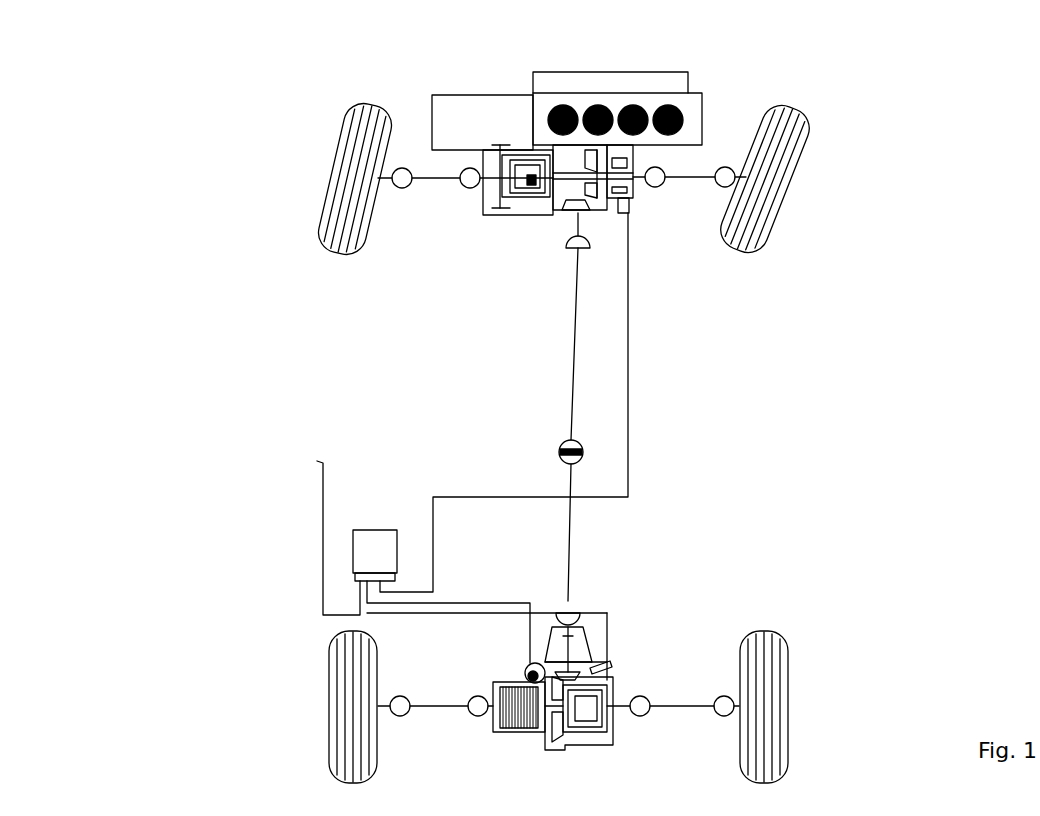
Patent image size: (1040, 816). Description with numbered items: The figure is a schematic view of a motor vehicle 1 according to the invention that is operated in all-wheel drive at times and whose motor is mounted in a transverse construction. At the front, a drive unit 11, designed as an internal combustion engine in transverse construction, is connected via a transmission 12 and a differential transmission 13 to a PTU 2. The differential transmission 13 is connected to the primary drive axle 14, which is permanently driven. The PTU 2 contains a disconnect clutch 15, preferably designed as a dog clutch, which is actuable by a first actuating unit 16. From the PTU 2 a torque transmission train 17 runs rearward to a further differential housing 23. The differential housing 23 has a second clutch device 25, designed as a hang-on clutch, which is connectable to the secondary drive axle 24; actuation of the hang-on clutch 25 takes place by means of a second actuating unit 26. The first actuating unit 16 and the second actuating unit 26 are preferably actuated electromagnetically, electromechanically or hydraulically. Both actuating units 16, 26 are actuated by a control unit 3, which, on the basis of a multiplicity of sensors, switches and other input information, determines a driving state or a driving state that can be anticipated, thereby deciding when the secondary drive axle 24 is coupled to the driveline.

The motor vehicle 1 is at (266, 279).
The PTU 2 is at (652, 215).
The control unit 3 is at (374, 547).
The drive unit 11 is at (697, 131).
The transmission 12 is at (473, 133).
The differential transmission 13 is at (485, 173).
The primary drive axle 14 is at (437, 178).
The disconnect clutch 15 is at (622, 165).
The first actuating unit 16 is at (623, 208).
The torque transmission train 17 is at (578, 357).
The differential housing 23 is at (578, 703).
The secondary drive axle 24 is at (680, 703).
The second clutch device 25 is at (497, 700).
The second actuating unit 26 is at (533, 681).